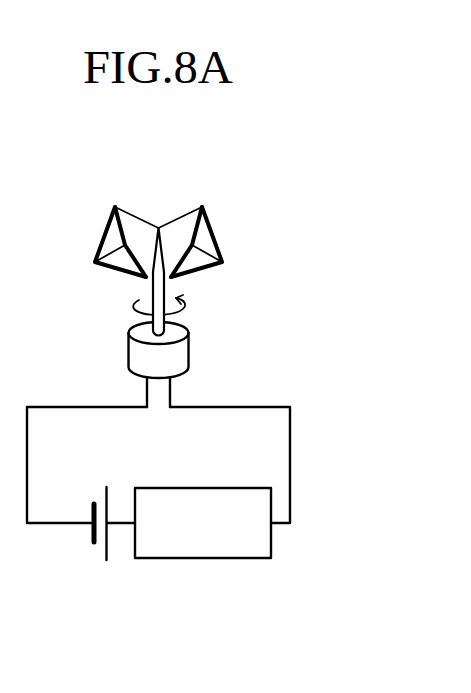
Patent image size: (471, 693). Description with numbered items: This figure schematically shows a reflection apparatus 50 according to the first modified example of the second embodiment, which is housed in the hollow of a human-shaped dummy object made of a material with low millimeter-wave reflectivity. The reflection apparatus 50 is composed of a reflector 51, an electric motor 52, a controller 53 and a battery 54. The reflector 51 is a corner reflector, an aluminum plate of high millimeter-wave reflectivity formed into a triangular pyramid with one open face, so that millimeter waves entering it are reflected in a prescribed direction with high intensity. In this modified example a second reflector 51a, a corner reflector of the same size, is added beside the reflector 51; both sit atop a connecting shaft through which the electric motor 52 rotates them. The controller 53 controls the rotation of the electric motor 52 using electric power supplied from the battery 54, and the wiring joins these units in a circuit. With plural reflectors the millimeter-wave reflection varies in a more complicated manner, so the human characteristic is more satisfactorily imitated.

The reflection apparatus 50 is at (217, 357).
The reflector 51 is at (128, 207).
The reflector 51a is at (190, 209).
The electric motor 52 is at (128, 347).
The controller 53 is at (202, 559).
The battery 54 is at (108, 546).